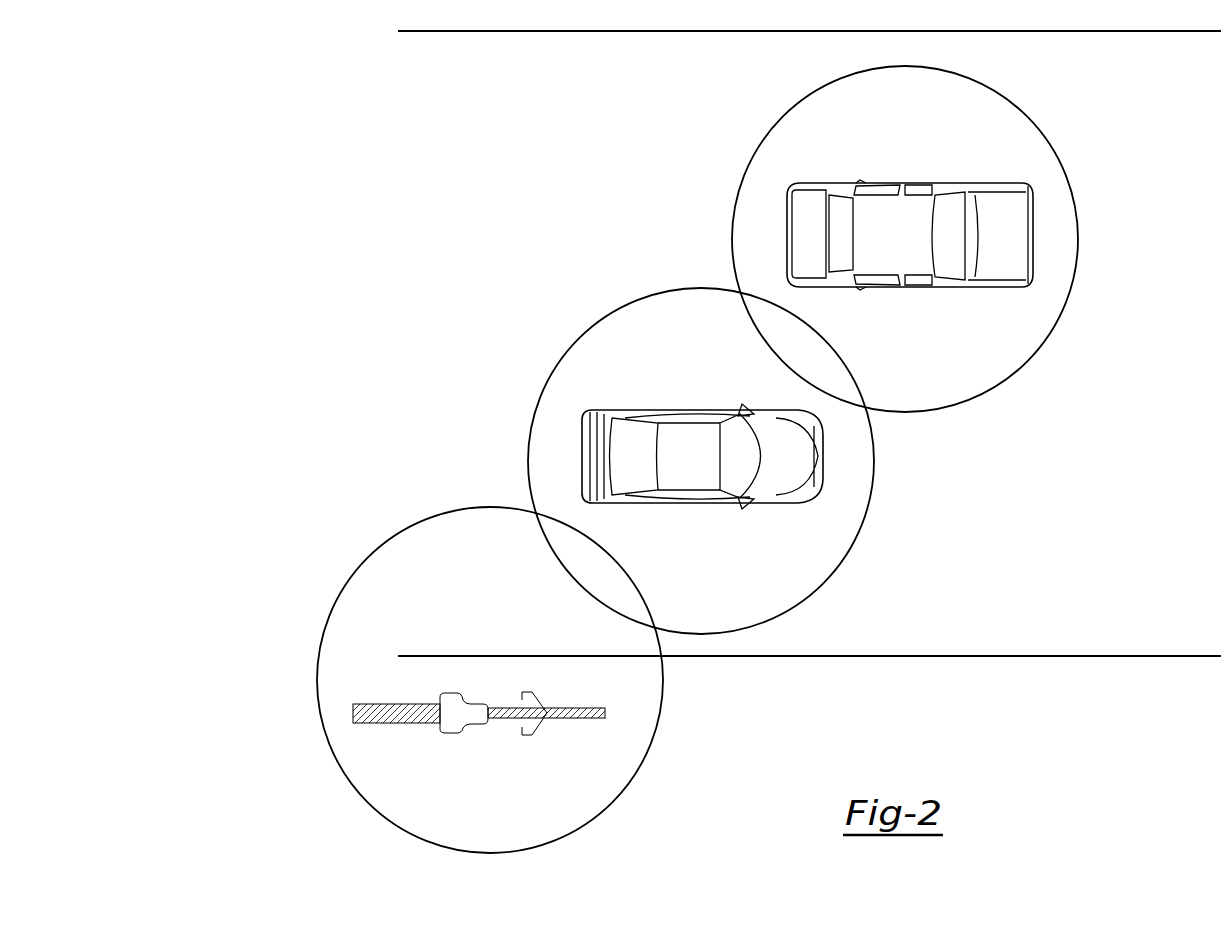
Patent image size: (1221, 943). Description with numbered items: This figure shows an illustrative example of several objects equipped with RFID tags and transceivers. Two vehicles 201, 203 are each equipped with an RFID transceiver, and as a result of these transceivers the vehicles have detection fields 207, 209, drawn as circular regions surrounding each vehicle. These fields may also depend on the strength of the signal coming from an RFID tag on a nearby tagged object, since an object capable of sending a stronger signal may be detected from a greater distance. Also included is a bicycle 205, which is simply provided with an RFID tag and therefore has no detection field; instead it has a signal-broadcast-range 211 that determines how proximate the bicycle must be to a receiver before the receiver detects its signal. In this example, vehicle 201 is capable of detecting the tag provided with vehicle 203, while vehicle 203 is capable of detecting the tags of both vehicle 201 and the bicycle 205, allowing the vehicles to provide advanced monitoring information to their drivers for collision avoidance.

The vehicle 201 is at (923, 288).
The vehicle 203 is at (687, 413).
The bicycle 205 is at (505, 718).
The detection field 207 is at (1076, 212).
The detection field 209 is at (585, 330).
The signal-broadcast-range 211 is at (318, 678).